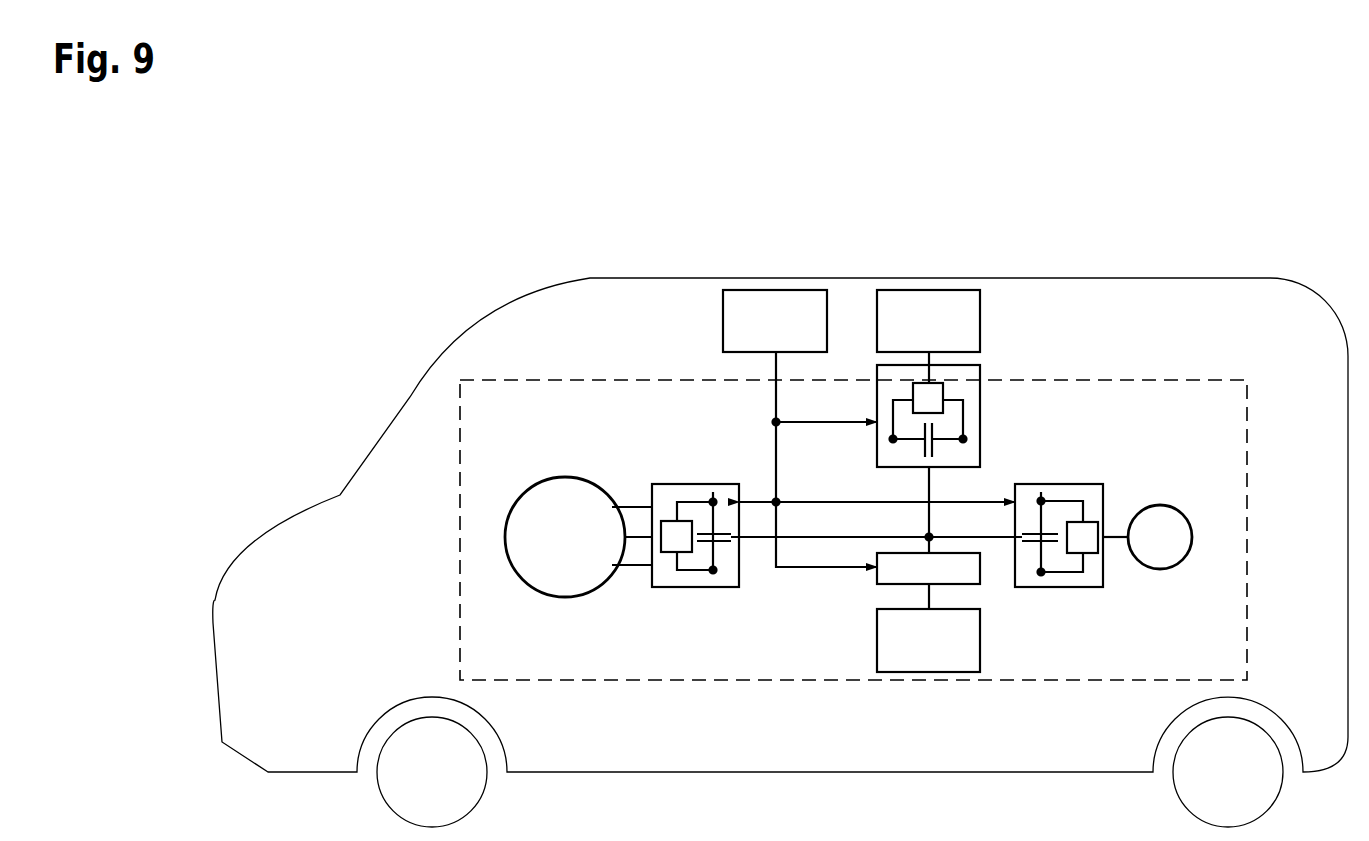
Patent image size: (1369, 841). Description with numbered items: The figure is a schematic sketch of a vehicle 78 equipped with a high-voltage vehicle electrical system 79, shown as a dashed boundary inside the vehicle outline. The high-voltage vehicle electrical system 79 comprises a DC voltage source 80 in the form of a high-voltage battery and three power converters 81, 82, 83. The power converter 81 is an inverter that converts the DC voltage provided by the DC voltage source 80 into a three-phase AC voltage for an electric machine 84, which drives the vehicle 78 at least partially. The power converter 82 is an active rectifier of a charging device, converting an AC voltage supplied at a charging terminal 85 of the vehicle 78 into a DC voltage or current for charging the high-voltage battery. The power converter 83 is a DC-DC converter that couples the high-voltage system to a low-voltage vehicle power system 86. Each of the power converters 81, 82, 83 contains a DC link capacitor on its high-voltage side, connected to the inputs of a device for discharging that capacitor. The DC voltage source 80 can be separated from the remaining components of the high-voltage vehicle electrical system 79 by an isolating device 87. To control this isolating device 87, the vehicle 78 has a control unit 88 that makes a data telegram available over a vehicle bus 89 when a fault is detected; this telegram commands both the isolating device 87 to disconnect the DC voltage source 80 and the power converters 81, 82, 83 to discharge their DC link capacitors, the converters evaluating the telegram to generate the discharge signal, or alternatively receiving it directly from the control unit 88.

The vehicle 78 is at (1082, 278).
The high-voltage vehicle electrical system 79 is at (460, 617).
The DC voltage source 80 is at (877, 643).
The power converter 81 is at (695, 513).
The power converter 82 is at (1059, 513).
The power converter 83 is at (957, 407).
The electric machine 84 is at (566, 477).
The charging terminal 85 is at (1160, 505).
The low-voltage vehicle power system 86 is at (930, 290).
The isolating device 87 is at (895, 584).
The control unit 88 is at (777, 290).
The vehicle bus 89 is at (776, 368).